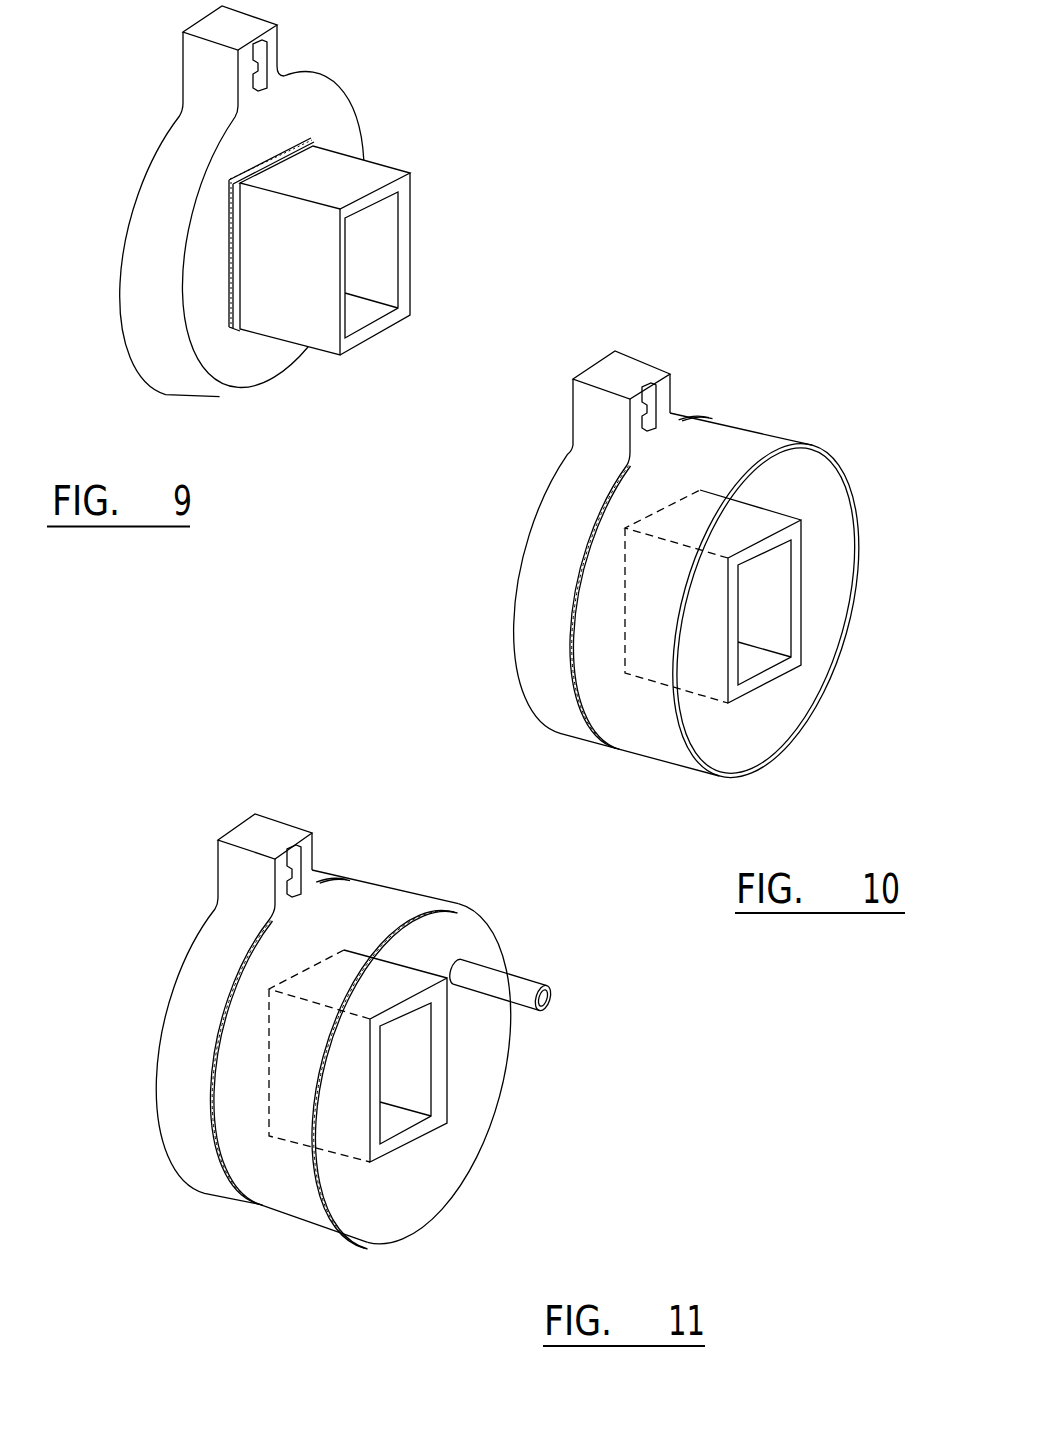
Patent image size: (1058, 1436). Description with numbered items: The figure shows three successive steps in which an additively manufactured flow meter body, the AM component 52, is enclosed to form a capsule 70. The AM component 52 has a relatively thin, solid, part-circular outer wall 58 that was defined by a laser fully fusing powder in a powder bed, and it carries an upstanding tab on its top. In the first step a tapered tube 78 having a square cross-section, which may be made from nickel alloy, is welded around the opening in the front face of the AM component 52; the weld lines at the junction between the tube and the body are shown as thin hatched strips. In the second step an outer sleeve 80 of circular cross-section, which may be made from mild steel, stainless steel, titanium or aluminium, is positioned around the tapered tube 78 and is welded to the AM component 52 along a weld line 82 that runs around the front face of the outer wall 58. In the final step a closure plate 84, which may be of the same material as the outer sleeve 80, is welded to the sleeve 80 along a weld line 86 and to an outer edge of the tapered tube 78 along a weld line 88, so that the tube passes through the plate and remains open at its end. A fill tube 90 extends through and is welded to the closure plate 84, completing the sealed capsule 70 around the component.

In FIG. 9, the AM component 52 is at (355, 86).
In FIG. 10, the AM component 52 is at (728, 405).
In FIG. 9, the outer wall 58 is at (196, 135).
In FIG. 10, the outer wall 58 is at (578, 490).
In FIG. 11, the outer wall 58 is at (228, 950).
In FIG. 11, the capsule 70 is at (508, 937).
In FIG. 9, the tapered tube 78 is at (412, 242).
In FIG. 10, the tapered tube 78 is at (806, 593).
In FIG. 9, the outer sleeve 80 is at (226, 262).
In FIG. 10, the outer sleeve 80 is at (843, 481).
In FIG. 11, the outer sleeve 80 is at (403, 893).
In FIG. 10, the weld line 82 is at (578, 590).
In FIG. 11, the weld line 82 is at (220, 1072).
In FIG. 11, the closure plate 84 is at (475, 1077).
In FIG. 11, the weld line 86 is at (312, 1178).
In FIG. 11, the weld line 88 is at (448, 1127).
In FIG. 11, the fill tube 90 is at (528, 1003).